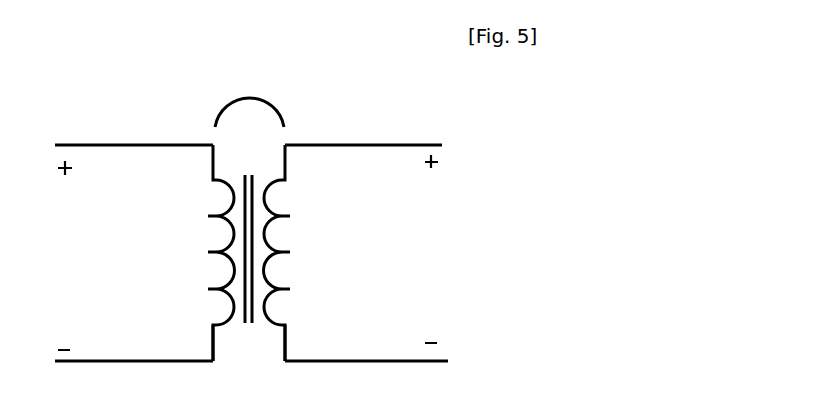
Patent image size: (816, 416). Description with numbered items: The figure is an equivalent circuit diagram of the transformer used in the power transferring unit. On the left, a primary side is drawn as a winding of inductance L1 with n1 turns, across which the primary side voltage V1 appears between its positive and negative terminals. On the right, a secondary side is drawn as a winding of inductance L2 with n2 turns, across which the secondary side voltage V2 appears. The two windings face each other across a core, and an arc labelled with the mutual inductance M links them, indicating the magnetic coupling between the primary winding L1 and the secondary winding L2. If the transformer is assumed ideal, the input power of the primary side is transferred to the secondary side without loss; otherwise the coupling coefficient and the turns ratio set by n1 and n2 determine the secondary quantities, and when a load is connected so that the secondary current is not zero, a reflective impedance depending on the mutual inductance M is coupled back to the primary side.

The primary side voltage V1 is at (133, 253).
The secondary side voltage V2 is at (368, 253).
The primary winding inductance L1 is at (198, 253).
The secondary winding inductance L2 is at (302, 253).
The mutual inductance M is at (249, 188).
The primary winding turns n1 is at (195, 369).
The secondary winding turns n2 is at (301, 369).